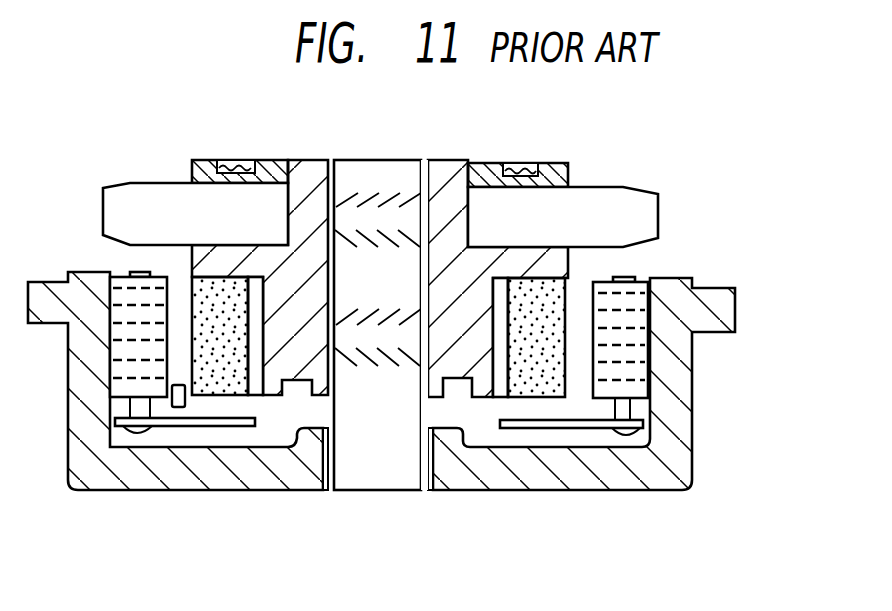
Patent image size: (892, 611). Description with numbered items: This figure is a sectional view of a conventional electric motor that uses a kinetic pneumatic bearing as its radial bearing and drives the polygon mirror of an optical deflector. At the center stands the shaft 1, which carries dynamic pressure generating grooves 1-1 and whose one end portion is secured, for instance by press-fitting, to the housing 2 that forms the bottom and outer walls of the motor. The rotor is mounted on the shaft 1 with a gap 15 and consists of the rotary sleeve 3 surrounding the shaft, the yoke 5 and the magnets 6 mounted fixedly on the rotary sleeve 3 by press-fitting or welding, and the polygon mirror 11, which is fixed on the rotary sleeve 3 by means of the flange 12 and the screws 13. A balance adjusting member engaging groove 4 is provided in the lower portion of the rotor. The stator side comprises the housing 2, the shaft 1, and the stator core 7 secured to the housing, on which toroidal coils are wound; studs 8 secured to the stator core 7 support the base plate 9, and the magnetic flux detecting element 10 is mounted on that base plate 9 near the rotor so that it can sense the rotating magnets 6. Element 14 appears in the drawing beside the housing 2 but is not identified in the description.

The shaft 1 is at (378, 483).
The dynamic pressure generating grooves 1-1 is at (372, 367).
The housing 2 is at (584, 483).
The rotary sleeve 3 is at (313, 162).
The balance adjusting member engaging groove 4 is at (454, 392).
The yoke 5 is at (501, 393).
The magnets 6 is at (540, 392).
The stator core 7 is at (640, 372).
The studs 8 is at (628, 413).
The base plate 9 is at (233, 427).
The magnetic flux detecting element 10 is at (183, 404).
The polygon mirror 11 is at (645, 214).
The flange 12 is at (573, 170).
The screws 13 is at (528, 166).
The bearing sleeve 14 is at (322, 492).
The gap 15 is at (426, 150).